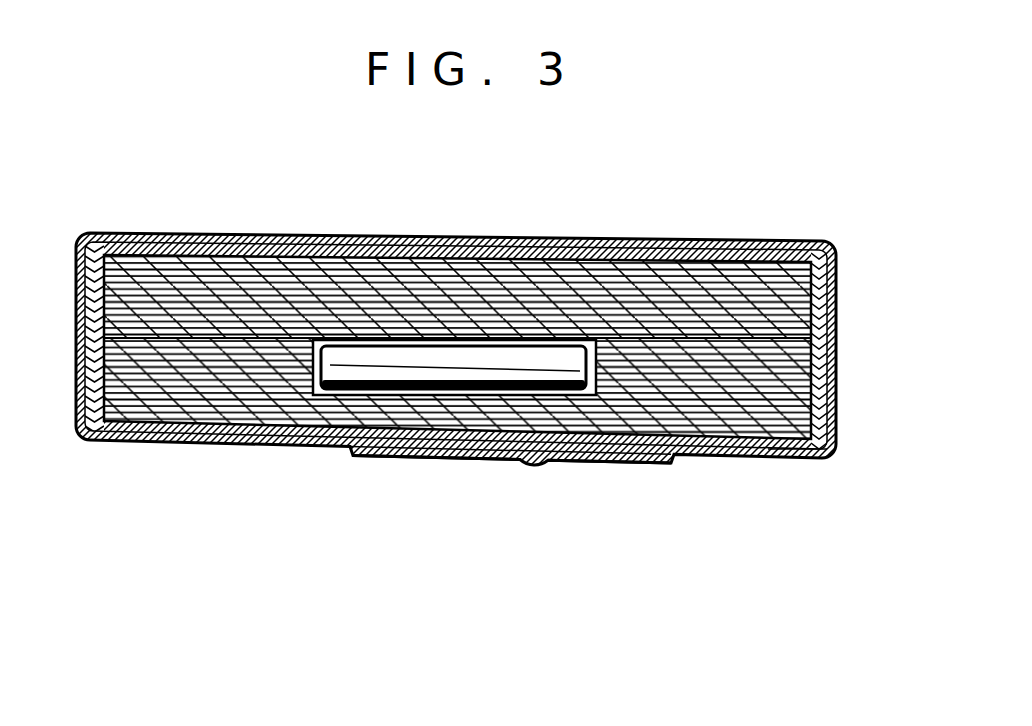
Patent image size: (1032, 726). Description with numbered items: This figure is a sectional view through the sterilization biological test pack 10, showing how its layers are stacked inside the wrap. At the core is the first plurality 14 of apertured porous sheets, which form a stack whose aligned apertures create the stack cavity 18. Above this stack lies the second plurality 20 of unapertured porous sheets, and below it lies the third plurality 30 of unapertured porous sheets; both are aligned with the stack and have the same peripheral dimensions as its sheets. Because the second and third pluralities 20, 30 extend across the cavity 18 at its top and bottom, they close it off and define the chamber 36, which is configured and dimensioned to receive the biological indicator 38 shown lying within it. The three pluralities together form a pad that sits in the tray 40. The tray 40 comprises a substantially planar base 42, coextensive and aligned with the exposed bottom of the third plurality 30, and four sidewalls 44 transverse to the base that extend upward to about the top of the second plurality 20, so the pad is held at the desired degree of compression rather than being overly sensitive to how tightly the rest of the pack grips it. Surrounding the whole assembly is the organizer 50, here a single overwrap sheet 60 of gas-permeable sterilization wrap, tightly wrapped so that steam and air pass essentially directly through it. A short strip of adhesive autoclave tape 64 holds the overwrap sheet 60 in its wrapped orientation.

The sterilization biological test pack 10 is at (190, 208).
The first plurality of apertured planar sheets 14 is at (170, 360).
The stack cavity 18 is at (297, 340).
The second plurality of unapertured planar sheets 20 is at (292, 280).
The third plurality of unapertured planar sheets 30 is at (221, 397).
The chamber 36 is at (462, 330).
The biological indicator 38 is at (452, 390).
The tray 40 is at (741, 426).
The base 42 is at (788, 427).
The sidewalls 44 is at (808, 363).
The organizer 50 is at (770, 232).
The overwrap sheet 60 is at (662, 250).
The adhesive autoclave tape 64 is at (372, 447).